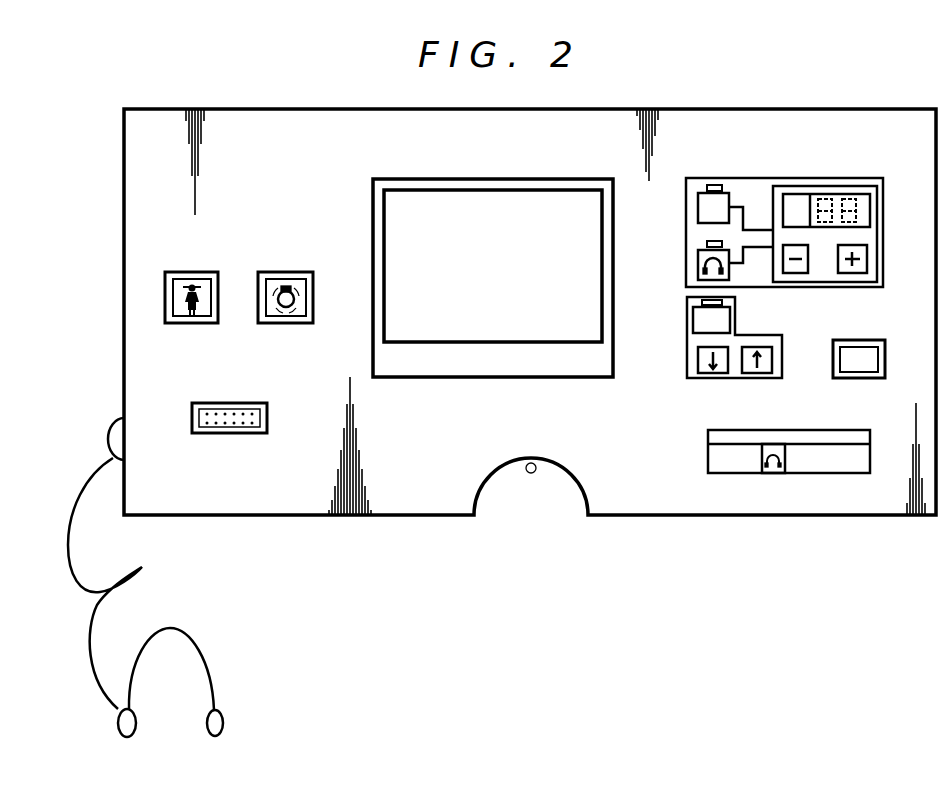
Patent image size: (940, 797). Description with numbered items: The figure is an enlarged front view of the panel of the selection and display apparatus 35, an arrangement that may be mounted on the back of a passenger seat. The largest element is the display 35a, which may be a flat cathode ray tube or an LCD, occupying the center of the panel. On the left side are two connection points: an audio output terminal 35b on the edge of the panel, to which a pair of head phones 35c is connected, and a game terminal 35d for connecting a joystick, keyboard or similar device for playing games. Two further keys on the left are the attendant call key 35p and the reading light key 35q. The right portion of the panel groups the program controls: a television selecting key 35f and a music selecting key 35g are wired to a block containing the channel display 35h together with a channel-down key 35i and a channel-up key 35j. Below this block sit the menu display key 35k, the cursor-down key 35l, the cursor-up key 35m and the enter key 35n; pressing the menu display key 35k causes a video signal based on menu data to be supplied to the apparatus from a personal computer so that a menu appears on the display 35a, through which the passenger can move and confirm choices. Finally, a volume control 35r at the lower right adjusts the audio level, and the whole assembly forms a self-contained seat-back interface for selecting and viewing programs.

The selection and display apparatus 35 is at (445, 505).
The display 35a is at (452, 335).
The audio output terminal 35b is at (113, 434).
The head phones 35c is at (223, 718).
The game terminal 35d is at (243, 427).
The television selecting key 35f is at (694, 211).
The music selecting key 35g is at (697, 263).
The channel display 35h is at (868, 205).
The channel-down key 35i is at (793, 273).
The channel-up key 35j is at (858, 273).
The menu display key 35k is at (697, 309).
The cursor-down key 35l is at (696, 360).
The cursor-up key 35m is at (751, 373).
The enter key 35n is at (866, 371).
The attendant call key 35p is at (206, 318).
The reading light key 35q is at (296, 318).
The volume control 35r is at (813, 463).